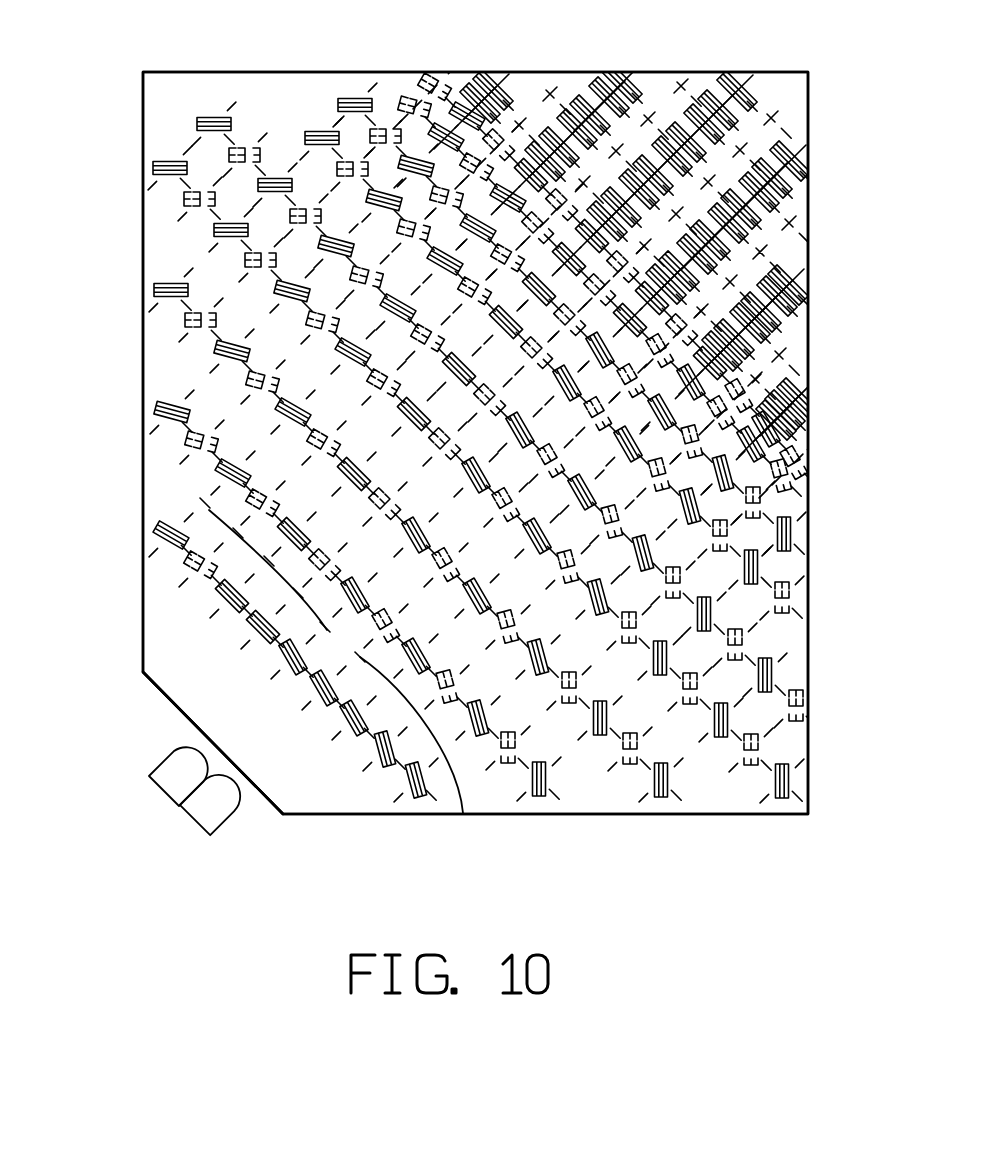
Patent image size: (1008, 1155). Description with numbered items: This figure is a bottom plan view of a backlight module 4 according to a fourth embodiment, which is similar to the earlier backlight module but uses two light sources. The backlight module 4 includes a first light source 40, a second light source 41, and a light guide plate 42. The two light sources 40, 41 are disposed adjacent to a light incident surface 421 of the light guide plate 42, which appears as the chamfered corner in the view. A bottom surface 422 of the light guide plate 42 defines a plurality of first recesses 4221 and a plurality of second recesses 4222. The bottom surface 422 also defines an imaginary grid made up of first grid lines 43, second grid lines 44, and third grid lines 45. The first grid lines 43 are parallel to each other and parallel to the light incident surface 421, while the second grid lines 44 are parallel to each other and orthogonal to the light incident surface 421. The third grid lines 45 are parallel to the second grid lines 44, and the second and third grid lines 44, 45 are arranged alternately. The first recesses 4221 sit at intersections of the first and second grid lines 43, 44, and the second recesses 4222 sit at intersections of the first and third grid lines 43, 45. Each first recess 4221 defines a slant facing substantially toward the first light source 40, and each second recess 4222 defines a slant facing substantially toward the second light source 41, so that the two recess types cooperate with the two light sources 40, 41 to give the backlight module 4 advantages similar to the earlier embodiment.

The backlight module 4 is at (465, 442).
The first light source 40 is at (150, 777).
The second light source 41 is at (181, 811).
The light guide plate 42 is at (523, 443).
The light incident surface 421 is at (155, 743).
The bottom surface 422 is at (834, 120).
The first recesses 4221 is at (176, 684).
The second recesses 4222 is at (307, 766).
The first grid lines 43 is at (761, 814).
The second grid lines 44 is at (188, 529).
The third grid lines 45 is at (423, 766).